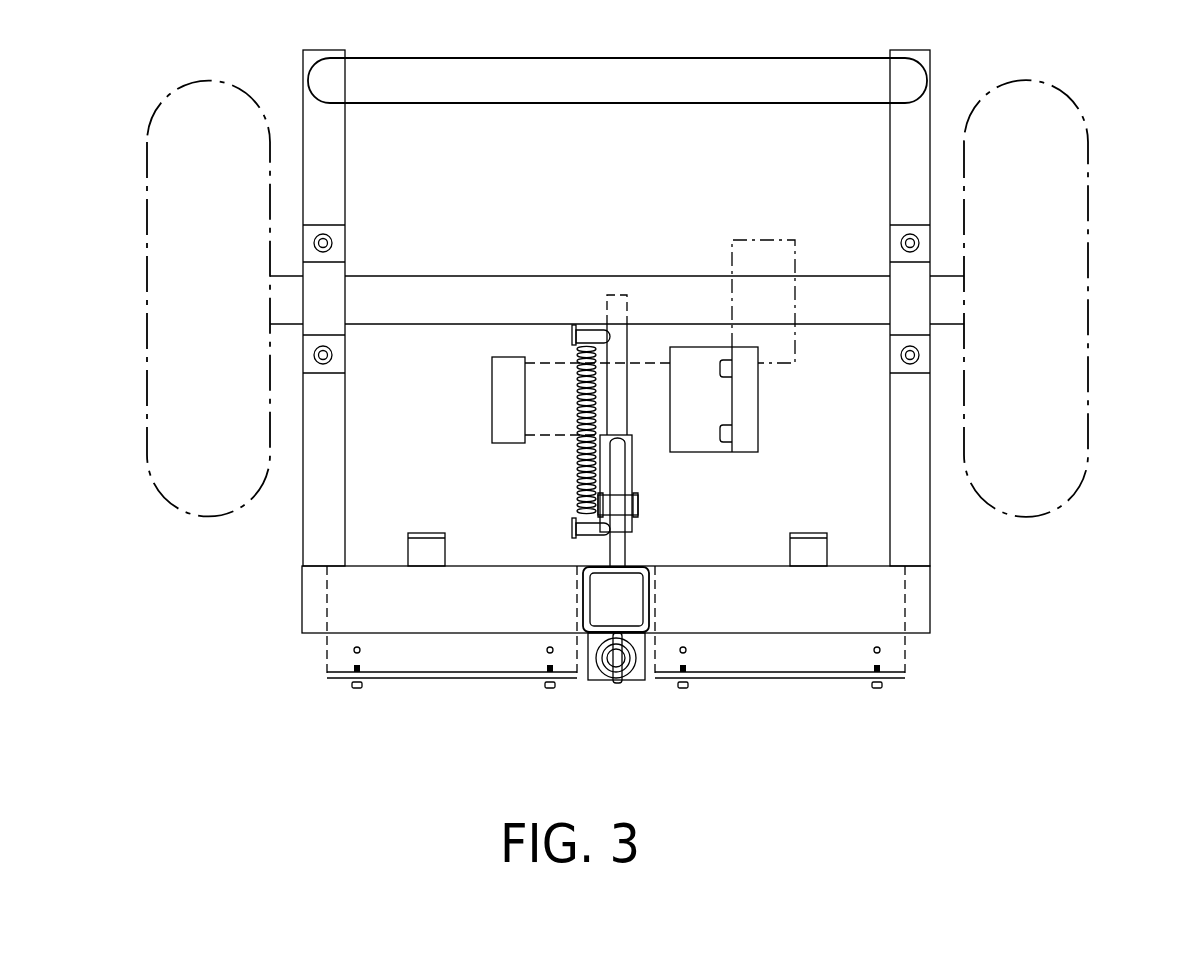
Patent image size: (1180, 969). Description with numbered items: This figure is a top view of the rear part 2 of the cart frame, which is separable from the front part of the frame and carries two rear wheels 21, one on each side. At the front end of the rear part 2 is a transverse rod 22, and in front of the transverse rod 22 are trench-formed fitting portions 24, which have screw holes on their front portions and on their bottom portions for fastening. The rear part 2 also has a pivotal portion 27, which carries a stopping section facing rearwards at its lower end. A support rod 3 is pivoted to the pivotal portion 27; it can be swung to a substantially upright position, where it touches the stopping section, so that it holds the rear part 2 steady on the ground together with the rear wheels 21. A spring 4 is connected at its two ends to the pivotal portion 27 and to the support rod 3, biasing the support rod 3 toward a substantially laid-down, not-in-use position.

The rear part 2 is at (1110, 298).
The rear wheels 21 is at (1062, 386).
The transverse rod 22 is at (770, 615).
The trench-formed fitting portions 24 is at (735, 660).
The support rod 3 is at (628, 343).
The pivotal portion 27 is at (617, 558).
The spring 4 is at (578, 400).